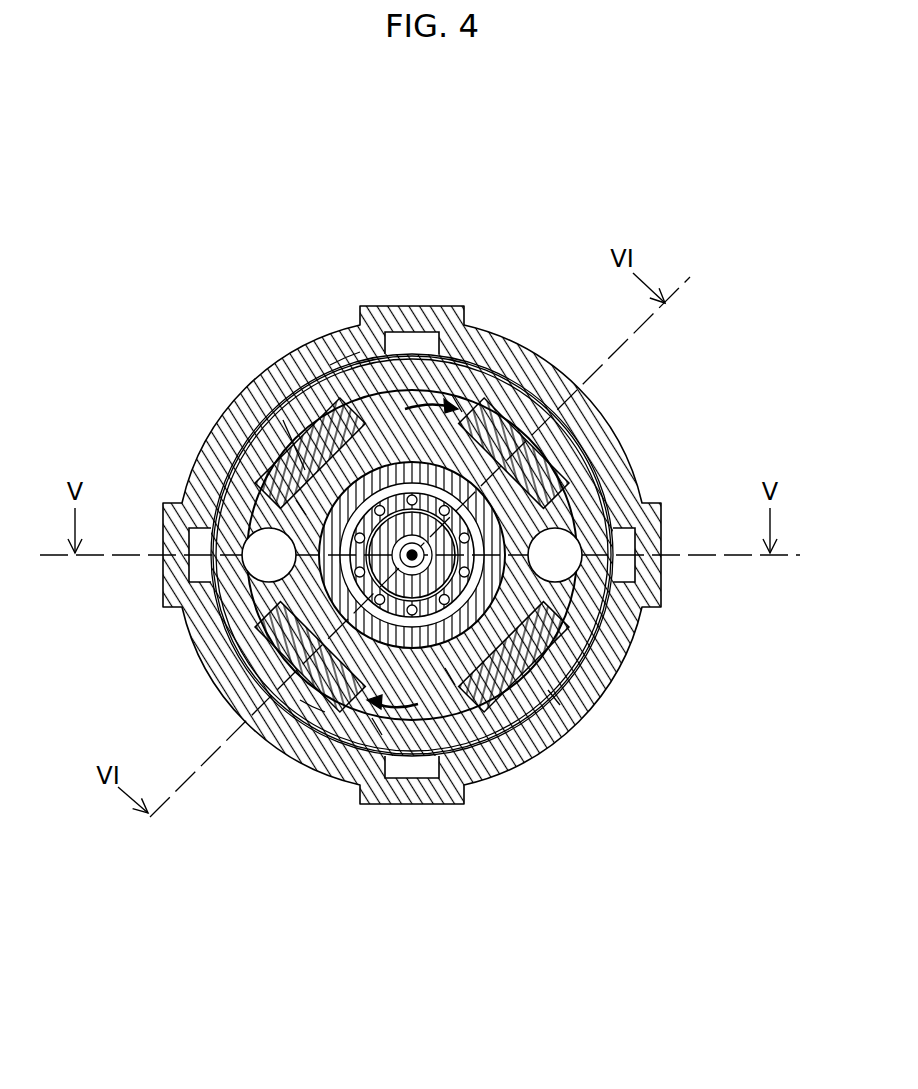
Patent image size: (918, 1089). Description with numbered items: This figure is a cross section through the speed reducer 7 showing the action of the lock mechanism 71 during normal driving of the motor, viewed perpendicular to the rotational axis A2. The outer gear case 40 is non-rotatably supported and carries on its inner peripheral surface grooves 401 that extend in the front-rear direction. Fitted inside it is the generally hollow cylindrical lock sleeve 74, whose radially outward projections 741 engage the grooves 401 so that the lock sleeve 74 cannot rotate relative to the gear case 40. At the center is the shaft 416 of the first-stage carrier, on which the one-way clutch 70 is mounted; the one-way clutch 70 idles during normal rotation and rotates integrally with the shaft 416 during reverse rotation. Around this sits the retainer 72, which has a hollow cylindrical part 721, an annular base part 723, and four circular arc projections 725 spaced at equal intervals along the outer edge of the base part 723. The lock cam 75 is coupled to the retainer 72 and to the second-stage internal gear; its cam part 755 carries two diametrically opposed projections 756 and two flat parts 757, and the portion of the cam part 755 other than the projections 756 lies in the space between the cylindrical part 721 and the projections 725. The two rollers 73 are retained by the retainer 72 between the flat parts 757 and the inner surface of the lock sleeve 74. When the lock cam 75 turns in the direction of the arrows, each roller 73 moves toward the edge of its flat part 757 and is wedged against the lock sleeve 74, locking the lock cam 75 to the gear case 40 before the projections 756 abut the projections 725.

The motor 7 is at (310, 190).
The gear case 40 is at (612, 705).
The rollers 73 is at (262, 537).
The grooves 401 is at (440, 337).
The projections 741 is at (418, 342).
The lock mechanism 71 is at (385, 348).
The one-way clutch 70 is at (285, 632).
The projections 725 is at (270, 445).
The cylindrical part 721 is at (510, 505).
The base part 723 is at (478, 520).
The shaft 416 is at (470, 445).
The rotational axis A2 is at (270, 413).
The lock sleeve 74 is at (295, 455).
The lock cam 75 is at (335, 372).
The flat parts 757 is at (300, 507).
The projections 756 is at (457, 403).
The cam part 755 is at (450, 677).
The retainer 72 is at (308, 705).